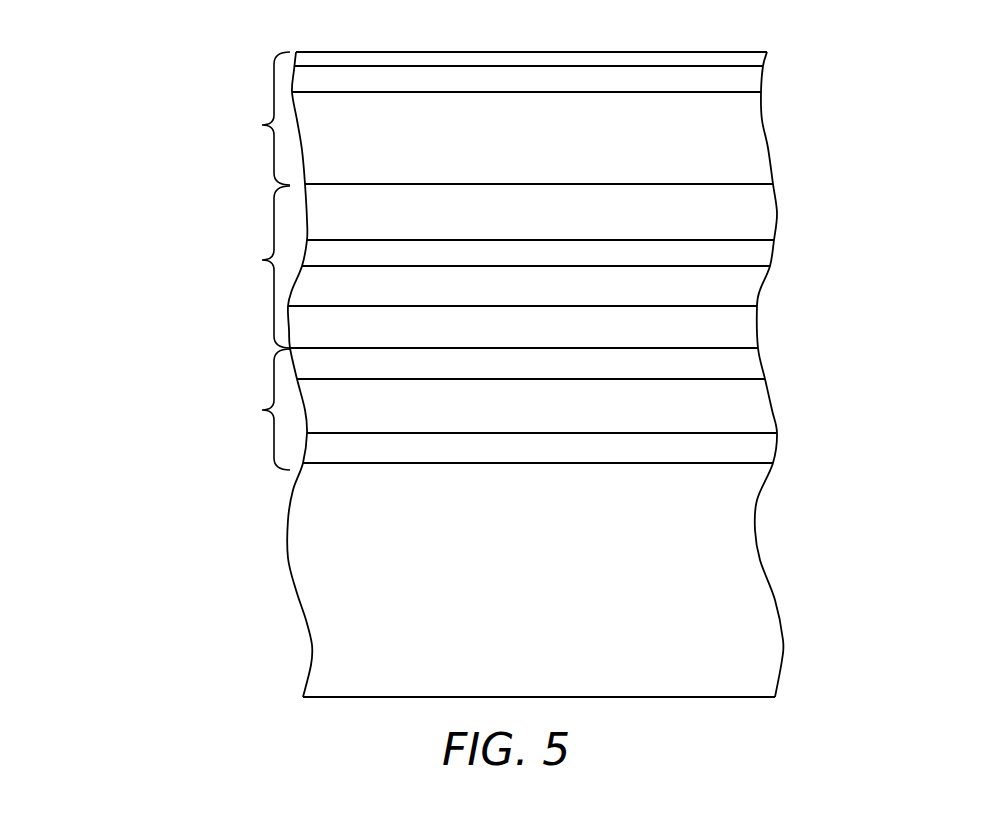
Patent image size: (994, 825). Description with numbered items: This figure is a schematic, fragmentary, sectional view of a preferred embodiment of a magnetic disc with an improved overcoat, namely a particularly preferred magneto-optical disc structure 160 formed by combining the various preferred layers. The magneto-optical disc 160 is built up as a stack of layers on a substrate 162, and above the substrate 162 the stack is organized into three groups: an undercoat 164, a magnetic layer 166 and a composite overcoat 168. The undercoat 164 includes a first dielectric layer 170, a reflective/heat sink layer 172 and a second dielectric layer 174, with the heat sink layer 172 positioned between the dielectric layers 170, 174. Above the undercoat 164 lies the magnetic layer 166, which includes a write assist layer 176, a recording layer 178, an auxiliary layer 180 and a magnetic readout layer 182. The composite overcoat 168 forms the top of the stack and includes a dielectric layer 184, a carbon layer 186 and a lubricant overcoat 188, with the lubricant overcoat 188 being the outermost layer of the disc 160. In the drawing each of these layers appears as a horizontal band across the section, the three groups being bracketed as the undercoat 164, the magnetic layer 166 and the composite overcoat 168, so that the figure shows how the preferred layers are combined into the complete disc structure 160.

The magneto-optical disc structure 160 is at (172, 308).
The substrate 162 is at (288, 558).
The undercoat 164 is at (263, 411).
The magnetic layer 166 is at (263, 260).
The composite overcoat 168 is at (263, 125).
The first dielectric layer 170 is at (773, 455).
The reflective/heat sink layer 172 is at (776, 415).
The second dielectric layer 174 is at (765, 368).
The write assist layer 176 is at (758, 334).
The recording layer 178 is at (761, 290).
The auxiliary layer 180 is at (775, 253).
The magnetic readout layer 182 is at (777, 213).
The dielectric layer 184 is at (768, 148).
The carbon layer 186 is at (762, 82).
The lubricant overcoat 188 is at (767, 61).